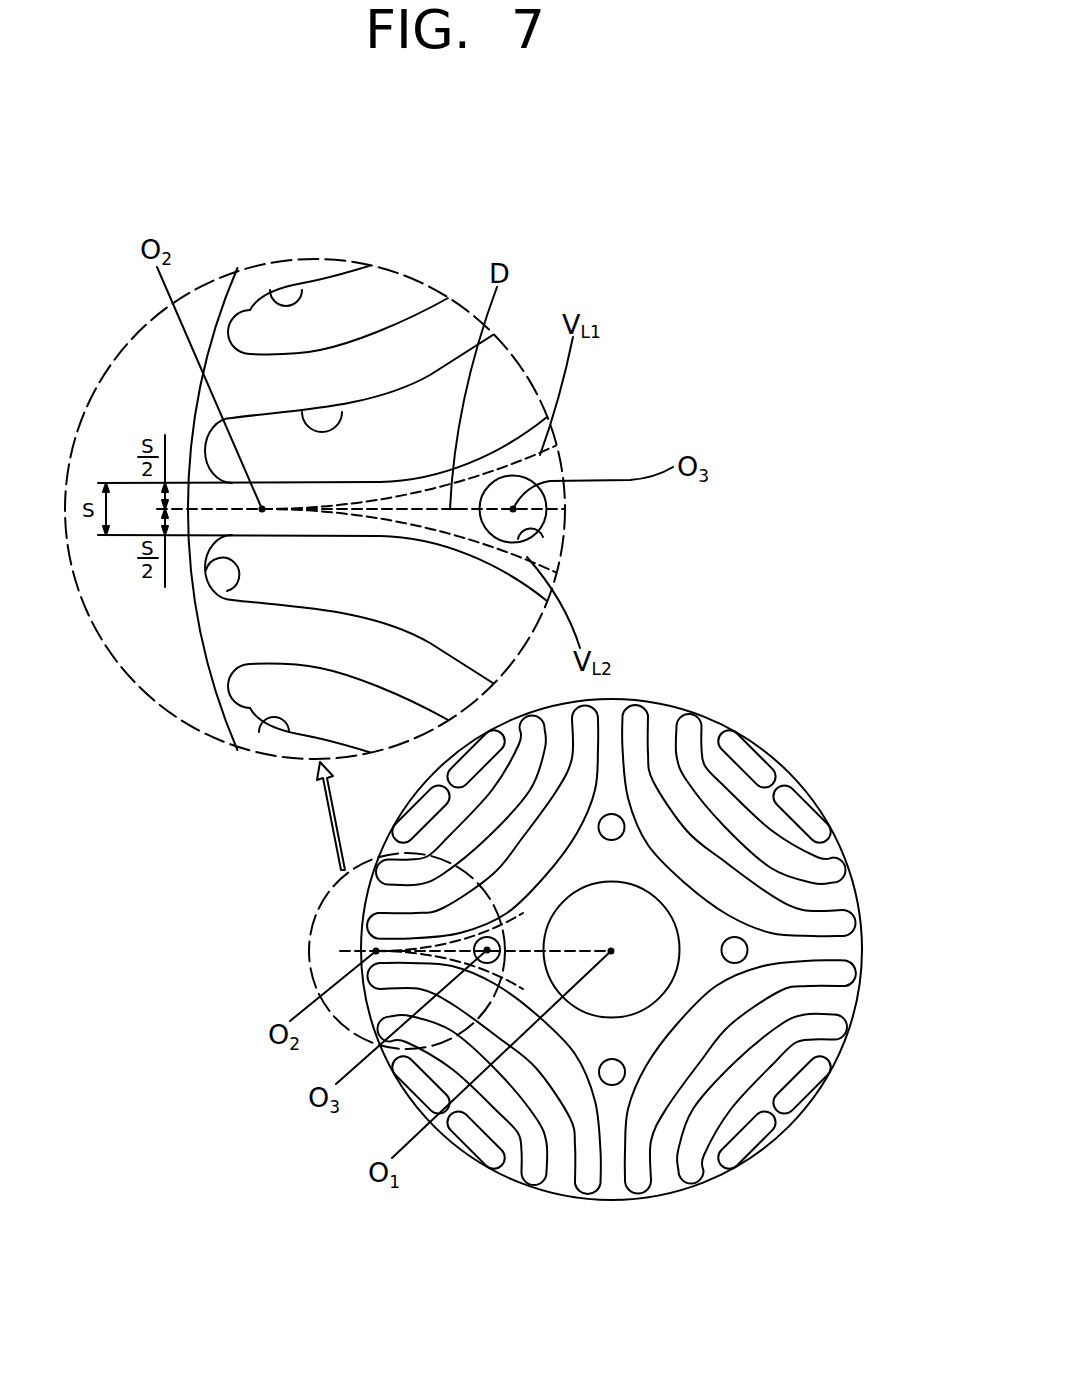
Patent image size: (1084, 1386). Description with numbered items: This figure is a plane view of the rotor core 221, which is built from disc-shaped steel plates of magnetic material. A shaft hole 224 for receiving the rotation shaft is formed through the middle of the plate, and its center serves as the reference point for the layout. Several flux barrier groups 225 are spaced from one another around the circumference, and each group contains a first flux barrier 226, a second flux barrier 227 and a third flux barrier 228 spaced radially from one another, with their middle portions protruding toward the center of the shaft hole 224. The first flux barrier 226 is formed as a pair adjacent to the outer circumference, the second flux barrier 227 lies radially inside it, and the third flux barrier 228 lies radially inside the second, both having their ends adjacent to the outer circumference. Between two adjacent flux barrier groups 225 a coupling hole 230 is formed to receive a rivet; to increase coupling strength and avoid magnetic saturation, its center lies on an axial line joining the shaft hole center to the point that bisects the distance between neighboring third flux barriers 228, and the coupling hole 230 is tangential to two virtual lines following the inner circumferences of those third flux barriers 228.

The rotor core 221 is at (667, 1203).
The shaft hole 224 is at (601, 1017).
The flux barrier group 225 is at (960, 673).
The first flux barrier 226 is at (793, 810).
The second flux barrier 227 is at (822, 867).
The third flux barrier 228 is at (837, 923).
The coupling hole 230 is at (740, 962).